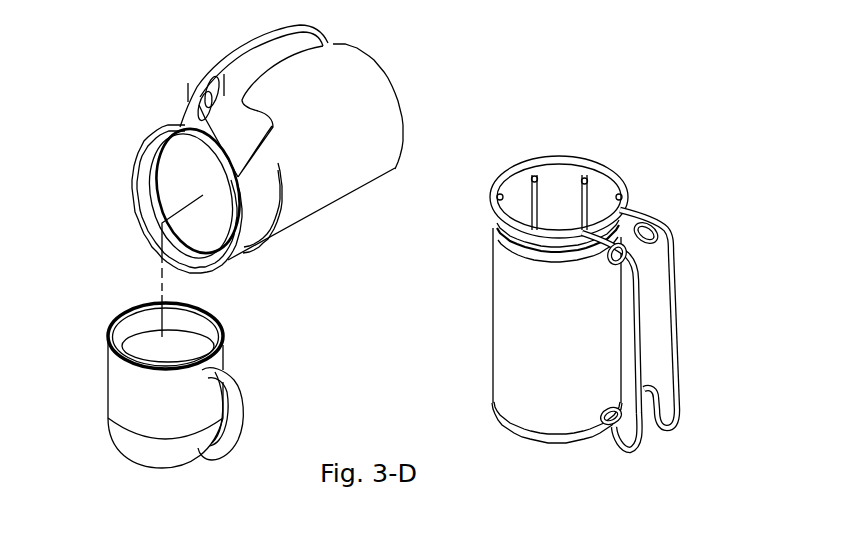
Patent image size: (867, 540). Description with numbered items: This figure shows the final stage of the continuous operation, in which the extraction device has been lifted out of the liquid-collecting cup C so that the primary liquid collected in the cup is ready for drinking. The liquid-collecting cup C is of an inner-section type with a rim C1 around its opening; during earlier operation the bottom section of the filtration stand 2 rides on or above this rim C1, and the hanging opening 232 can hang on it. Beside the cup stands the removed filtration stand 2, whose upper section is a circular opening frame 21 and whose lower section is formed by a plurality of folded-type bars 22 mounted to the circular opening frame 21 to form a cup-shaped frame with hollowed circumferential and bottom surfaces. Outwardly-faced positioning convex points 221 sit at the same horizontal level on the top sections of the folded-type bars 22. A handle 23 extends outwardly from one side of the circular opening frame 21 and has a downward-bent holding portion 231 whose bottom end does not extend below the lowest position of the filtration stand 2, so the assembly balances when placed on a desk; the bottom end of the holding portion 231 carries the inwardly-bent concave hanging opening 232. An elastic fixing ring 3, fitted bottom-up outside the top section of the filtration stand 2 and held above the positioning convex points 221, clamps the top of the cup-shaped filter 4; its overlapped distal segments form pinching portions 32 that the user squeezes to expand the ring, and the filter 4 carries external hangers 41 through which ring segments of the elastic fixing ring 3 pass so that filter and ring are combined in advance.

The filtration stand 2 is at (612, 168).
The circular opening frame 21 is at (520, 172).
The folded-type bars 22 is at (578, 205).
The positioning convex points 221 is at (587, 212).
The handle 23 is at (657, 227).
The holding portion 231 is at (683, 287).
The hanging opening 232 is at (616, 426).
The elastic fixing ring 3 is at (497, 228).
The pinching portions 32 is at (617, 267).
The filter 4 is at (500, 238).
The hangers 41 is at (518, 246).
The liquid-collecting cup C is at (317, 177).
The rim C1 is at (145, 195).